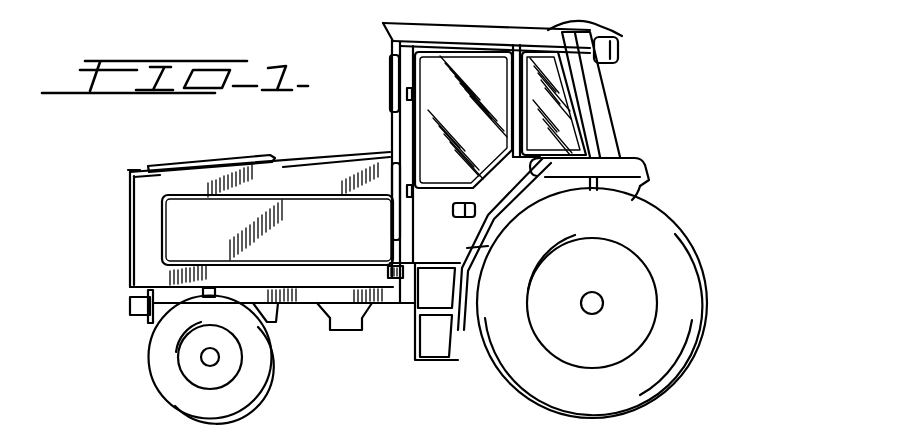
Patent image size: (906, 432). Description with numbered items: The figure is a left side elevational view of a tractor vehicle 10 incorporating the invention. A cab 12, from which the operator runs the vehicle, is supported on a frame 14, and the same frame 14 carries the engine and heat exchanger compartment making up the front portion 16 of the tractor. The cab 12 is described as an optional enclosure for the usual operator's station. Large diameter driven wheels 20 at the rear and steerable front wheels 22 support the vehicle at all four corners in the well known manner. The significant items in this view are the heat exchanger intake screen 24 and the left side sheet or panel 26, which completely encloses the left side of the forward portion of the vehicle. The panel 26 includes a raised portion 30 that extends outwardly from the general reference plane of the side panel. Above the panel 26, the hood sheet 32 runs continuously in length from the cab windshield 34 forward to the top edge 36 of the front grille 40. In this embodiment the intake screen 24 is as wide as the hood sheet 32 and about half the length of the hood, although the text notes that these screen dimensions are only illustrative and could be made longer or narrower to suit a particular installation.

The tractor vehicle 10 is at (335, 136).
The cab 12 is at (622, 48).
The frame 14 is at (380, 304).
The front portion of the tractor 16 is at (108, 183).
The driven wheels 20 is at (670, 264).
The steerable front wheels 22 is at (165, 363).
The heat exchanger intake screen 24 is at (242, 160).
The left side sheet or panel 26 is at (150, 207).
The raised portion 30 is at (178, 238).
The hood sheet 32 is at (312, 157).
The cab windshield 34 is at (391, 140).
The top edge 36 is at (135, 170).
The front grille 40 is at (128, 170).